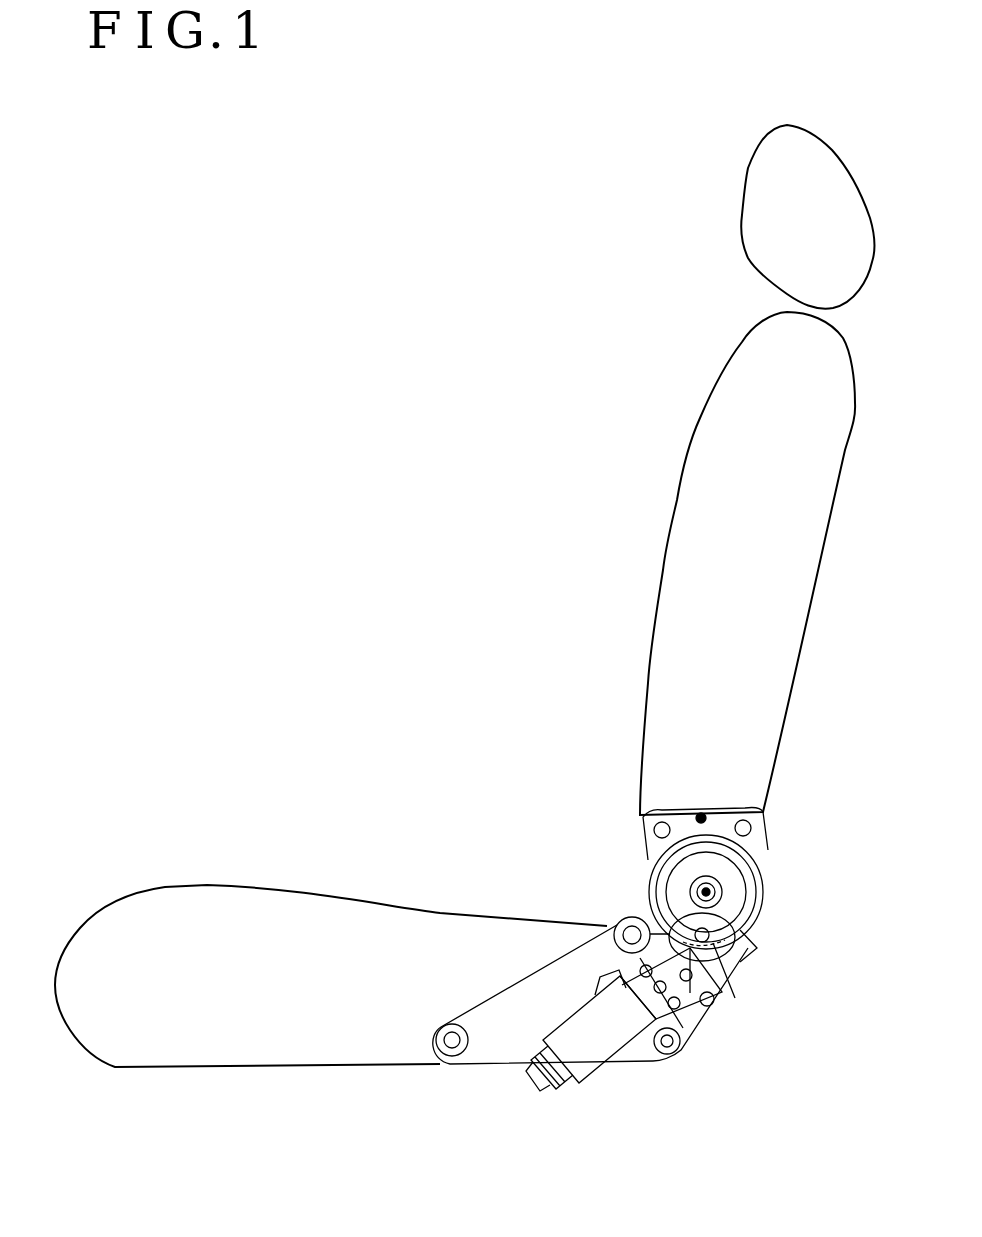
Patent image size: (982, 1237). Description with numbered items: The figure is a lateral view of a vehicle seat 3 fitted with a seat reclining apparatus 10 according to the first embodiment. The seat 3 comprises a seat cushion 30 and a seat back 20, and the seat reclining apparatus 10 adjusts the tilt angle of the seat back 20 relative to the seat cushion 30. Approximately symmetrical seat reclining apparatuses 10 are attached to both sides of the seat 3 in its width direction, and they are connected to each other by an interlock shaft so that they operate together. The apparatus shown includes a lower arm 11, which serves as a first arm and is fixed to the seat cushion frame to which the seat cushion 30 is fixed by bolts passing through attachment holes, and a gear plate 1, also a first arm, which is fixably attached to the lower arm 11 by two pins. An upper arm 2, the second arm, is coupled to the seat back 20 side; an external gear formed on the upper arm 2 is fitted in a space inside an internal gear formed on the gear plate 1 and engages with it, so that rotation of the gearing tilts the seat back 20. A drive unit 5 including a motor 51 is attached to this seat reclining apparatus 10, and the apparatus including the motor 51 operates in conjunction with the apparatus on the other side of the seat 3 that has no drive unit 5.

The gear plate 1 is at (642, 910).
The upper arm 2 is at (767, 868).
The seat 3 is at (495, 648).
The seat reclining apparatus 10 is at (582, 887).
The lower arm 11 is at (510, 1002).
The seat back 20 is at (672, 560).
The seat cushion 30 is at (347, 913).
The drive unit 5 is at (650, 1048).
The motor 51 is at (618, 1042).